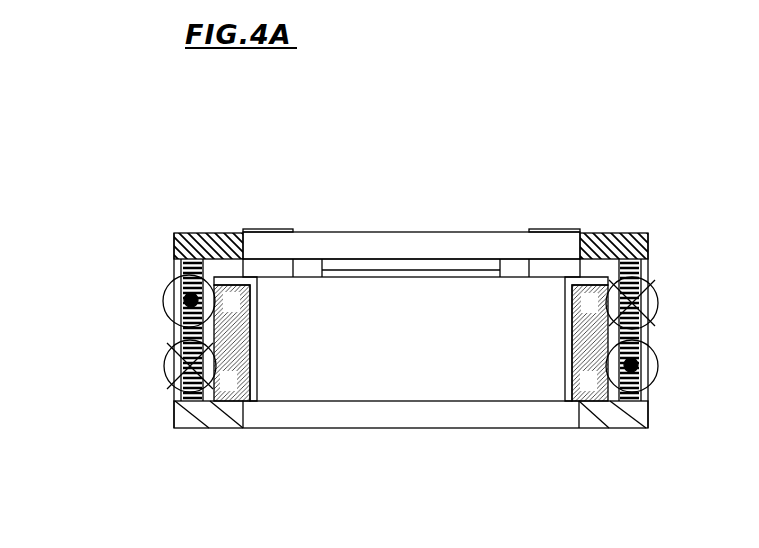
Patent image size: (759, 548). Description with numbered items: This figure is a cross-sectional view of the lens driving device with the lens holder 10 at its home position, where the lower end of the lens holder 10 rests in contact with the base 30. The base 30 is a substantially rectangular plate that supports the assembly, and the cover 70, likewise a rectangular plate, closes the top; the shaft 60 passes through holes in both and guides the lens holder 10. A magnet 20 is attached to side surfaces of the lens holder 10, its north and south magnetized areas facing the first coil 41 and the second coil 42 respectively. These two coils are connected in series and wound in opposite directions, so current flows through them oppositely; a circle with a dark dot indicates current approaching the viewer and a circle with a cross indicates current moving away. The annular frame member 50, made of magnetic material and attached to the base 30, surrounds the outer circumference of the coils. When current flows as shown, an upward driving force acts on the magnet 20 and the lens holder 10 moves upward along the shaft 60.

The lens holder 10 is at (292, 277).
The magnet 20 is at (234, 284).
The base 30 is at (620, 428).
The first coil 41 is at (641, 276).
The second coil 42 is at (643, 391).
The frame member 50 is at (179, 267).
The shaft 60 is at (546, 267).
The cover 70 is at (628, 233).